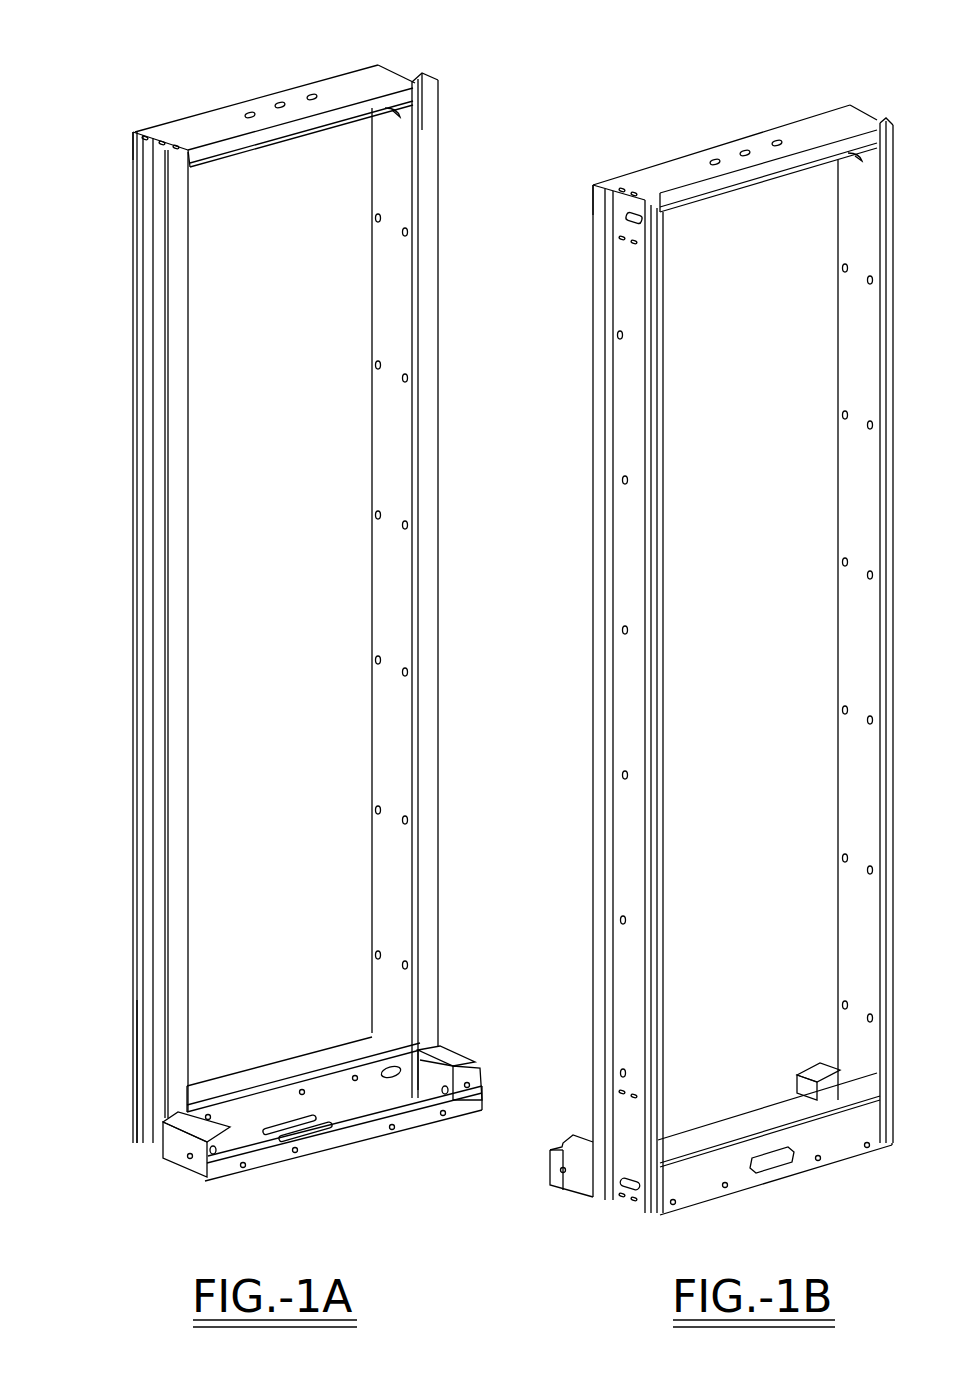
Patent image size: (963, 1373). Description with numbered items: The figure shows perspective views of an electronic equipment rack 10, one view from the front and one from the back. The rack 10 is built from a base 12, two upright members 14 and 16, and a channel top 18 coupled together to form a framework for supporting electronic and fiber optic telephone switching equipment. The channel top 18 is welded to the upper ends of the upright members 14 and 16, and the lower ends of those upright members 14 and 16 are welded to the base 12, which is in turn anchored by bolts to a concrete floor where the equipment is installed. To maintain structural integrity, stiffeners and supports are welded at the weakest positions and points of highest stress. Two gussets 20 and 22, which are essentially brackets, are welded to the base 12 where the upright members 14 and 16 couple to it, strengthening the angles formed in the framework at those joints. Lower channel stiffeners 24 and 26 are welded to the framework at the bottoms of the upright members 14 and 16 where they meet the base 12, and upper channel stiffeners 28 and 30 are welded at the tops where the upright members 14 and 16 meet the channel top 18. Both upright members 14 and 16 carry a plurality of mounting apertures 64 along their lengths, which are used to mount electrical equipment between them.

In FIG. 1A, the electronic equipment rack 10 is at (228, 92).
In FIG. 1B, the electronic equipment rack 10 is at (728, 125).
In FIG. 1A, the base 12 is at (352, 1135).
In FIG. 1B, the base 12 is at (800, 1165).
In FIG. 1A, the upright member 14 is at (158, 428).
In FIG. 1B, the upright member 14 is at (850, 440).
In FIG. 1A, the upright member 16 is at (387, 425).
In FIG. 1B, the upright member 16 is at (630, 428).
In FIG. 1A, the channel top 18 is at (327, 85).
In FIG. 1B, the channel top 18 is at (822, 122).
In FIG. 1A, the gusset 20 is at (180, 1143).
In FIG. 1B, the gusset 20 is at (820, 1068).
In FIG. 1A, the gusset 22 is at (457, 1055).
In FIG. 1B, the gusset 22 is at (560, 1145).
In FIG. 1A, the lower channel stiffener 24 is at (145, 1080).
In FIG. 1B, the lower channel stiffener 26 is at (618, 1180).
In FIG. 1A, the upper channel stiffener 28 is at (145, 152).
In FIG. 1B, the upper channel stiffener 30 is at (620, 200).
In FIG. 1A, the mounting apertures 64 is at (402, 234).
In FIG. 1B, the mounting apertures 64 is at (868, 577).